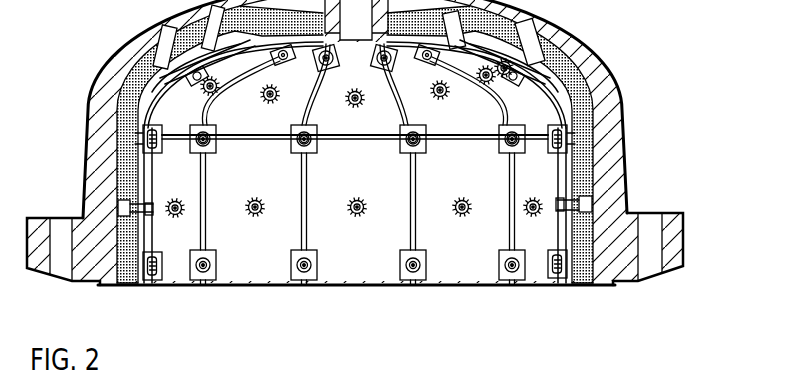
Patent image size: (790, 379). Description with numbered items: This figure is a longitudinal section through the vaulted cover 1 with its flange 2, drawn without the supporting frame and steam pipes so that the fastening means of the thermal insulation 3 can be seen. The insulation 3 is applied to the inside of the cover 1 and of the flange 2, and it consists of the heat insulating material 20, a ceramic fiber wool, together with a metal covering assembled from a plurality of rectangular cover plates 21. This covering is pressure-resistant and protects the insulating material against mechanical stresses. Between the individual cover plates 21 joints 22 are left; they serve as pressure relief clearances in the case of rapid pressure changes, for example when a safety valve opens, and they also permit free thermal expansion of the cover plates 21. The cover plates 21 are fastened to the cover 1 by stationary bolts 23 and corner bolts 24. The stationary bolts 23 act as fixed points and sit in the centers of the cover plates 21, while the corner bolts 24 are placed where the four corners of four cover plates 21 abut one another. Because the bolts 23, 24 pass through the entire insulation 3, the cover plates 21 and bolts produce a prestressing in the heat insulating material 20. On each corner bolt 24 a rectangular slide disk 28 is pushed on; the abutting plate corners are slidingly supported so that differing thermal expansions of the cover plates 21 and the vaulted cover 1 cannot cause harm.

The vaulted cover 1 is at (598, 92).
The flange 2 is at (670, 241).
The thermal insulation 3 is at (583, 152).
The heat insulating material 20 is at (583, 262).
The cover plates 21 is at (461, 255).
The joints 22 is at (361, 137).
The stationary bolts 23 is at (457, 212).
The corner bolts 24 is at (300, 266).
The slide disk 28 is at (506, 147).